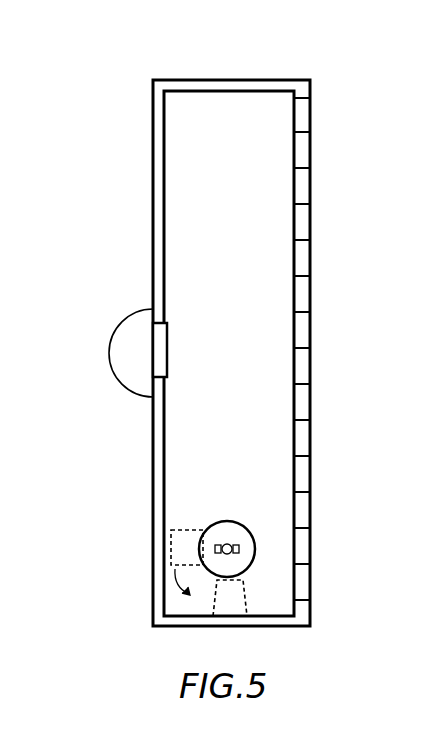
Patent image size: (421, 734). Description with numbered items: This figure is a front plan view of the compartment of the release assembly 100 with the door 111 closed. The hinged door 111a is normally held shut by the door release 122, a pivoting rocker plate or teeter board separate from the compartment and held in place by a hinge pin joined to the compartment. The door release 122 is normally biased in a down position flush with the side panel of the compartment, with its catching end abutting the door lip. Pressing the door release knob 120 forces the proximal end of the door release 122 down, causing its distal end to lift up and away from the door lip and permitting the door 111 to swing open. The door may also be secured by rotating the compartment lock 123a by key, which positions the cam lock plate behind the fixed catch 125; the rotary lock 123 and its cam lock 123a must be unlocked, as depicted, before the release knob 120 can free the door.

The release assembly 100 is at (152, 149).
The door 111 is at (207, 113).
The hinged door 111a is at (307, 148).
The door release knob 120 is at (122, 347).
The door release 122 is at (157, 350).
The rotary member 123 is at (227, 521).
The compartment lock 123a is at (178, 547).
The fixed catch 125 is at (213, 590).